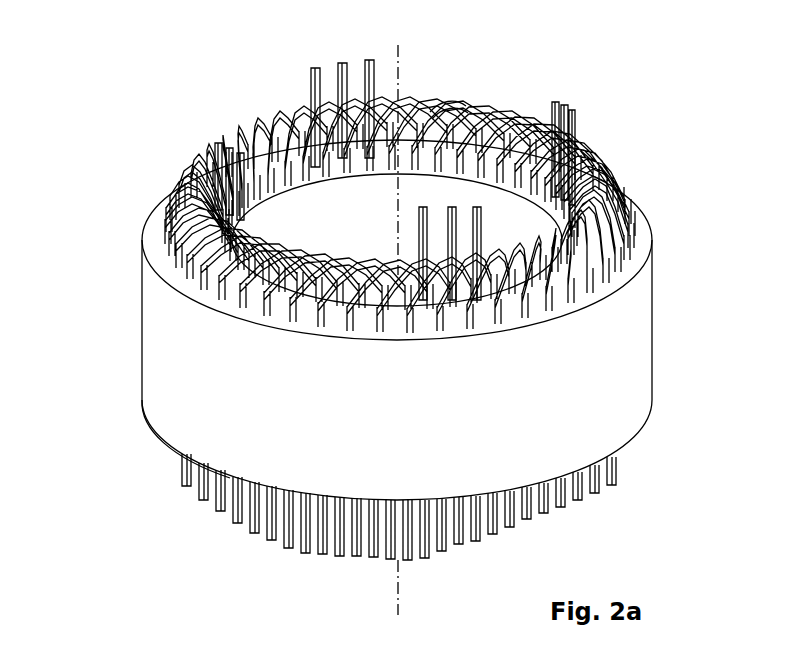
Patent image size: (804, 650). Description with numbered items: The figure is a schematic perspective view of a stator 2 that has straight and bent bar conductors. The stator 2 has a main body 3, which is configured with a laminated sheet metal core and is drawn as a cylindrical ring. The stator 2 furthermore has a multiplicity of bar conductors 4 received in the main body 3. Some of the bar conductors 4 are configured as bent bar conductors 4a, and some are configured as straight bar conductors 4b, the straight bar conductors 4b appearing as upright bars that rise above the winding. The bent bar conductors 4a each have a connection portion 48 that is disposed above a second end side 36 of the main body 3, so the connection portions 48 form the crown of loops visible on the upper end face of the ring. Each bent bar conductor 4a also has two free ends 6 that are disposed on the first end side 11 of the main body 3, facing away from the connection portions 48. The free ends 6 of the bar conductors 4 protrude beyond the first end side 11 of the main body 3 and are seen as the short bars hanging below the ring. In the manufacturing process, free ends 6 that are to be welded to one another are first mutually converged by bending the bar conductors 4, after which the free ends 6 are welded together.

The stator 2 is at (161, 546).
The main body 3 is at (633, 417).
The bar conductors 4 is at (653, 55).
The bent bar conductors 4a is at (612, 183).
The straight bar conductors 4b is at (553, 100).
The free ends 6 is at (583, 490).
The first end side 11 is at (167, 445).
The second end side 36 is at (157, 220).
The connection portion 48 is at (450, 100).